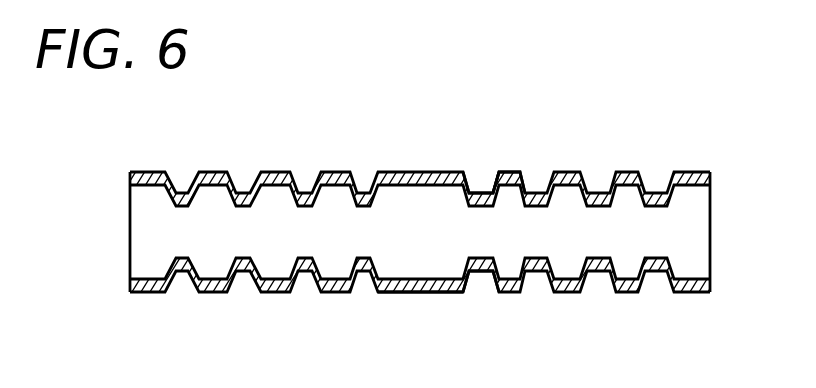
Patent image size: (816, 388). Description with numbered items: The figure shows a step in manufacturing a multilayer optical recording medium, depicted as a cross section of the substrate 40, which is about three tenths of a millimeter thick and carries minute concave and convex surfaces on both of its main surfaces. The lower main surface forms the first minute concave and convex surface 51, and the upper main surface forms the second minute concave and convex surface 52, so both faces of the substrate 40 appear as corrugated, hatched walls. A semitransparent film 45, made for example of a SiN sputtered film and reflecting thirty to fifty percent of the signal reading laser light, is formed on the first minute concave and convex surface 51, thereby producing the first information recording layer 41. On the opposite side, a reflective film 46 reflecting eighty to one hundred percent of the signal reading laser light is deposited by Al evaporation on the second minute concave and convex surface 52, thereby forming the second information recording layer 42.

The substrate 40 is at (140, 230).
The first information recording layer 41 is at (515, 345).
The second information recording layer 42 is at (550, 103).
The semitransparent film 45 is at (420, 320).
The reflective film 46 is at (508, 173).
The first minute concave and convex surface 51 is at (489, 309).
The second minute concave and convex surface 52 is at (470, 173).